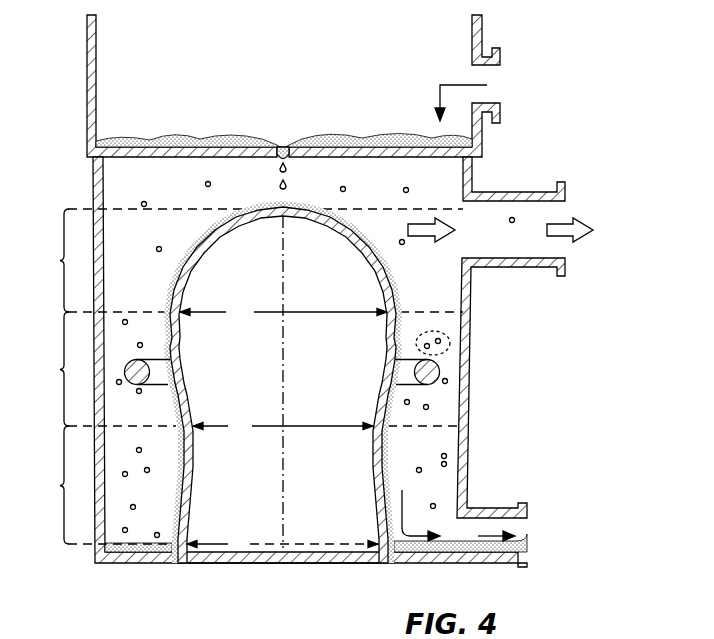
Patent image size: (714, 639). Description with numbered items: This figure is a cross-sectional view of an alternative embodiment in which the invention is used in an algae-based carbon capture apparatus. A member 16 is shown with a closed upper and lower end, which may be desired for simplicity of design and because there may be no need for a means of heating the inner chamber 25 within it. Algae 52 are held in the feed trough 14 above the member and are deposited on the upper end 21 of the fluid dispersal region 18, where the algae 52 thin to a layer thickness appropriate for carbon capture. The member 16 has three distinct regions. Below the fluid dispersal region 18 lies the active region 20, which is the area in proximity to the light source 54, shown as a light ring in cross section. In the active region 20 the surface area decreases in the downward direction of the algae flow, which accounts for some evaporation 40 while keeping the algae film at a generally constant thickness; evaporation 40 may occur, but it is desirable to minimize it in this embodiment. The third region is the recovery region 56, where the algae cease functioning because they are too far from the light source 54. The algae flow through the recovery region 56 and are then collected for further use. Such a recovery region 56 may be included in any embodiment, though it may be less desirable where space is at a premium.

The feed trough 14 is at (96, 78).
The algae 52 is at (361, 138).
The upper end 21 is at (291, 213).
The member 16 is at (184, 232).
The inner chamber 25 is at (342, 288).
The evaporation 40 is at (441, 333).
The light source 54 is at (440, 373).
The fluid dispersal region 18 is at (242, 260).
The active region 20 is at (242, 369).
The recovery region 56 is at (241, 485).